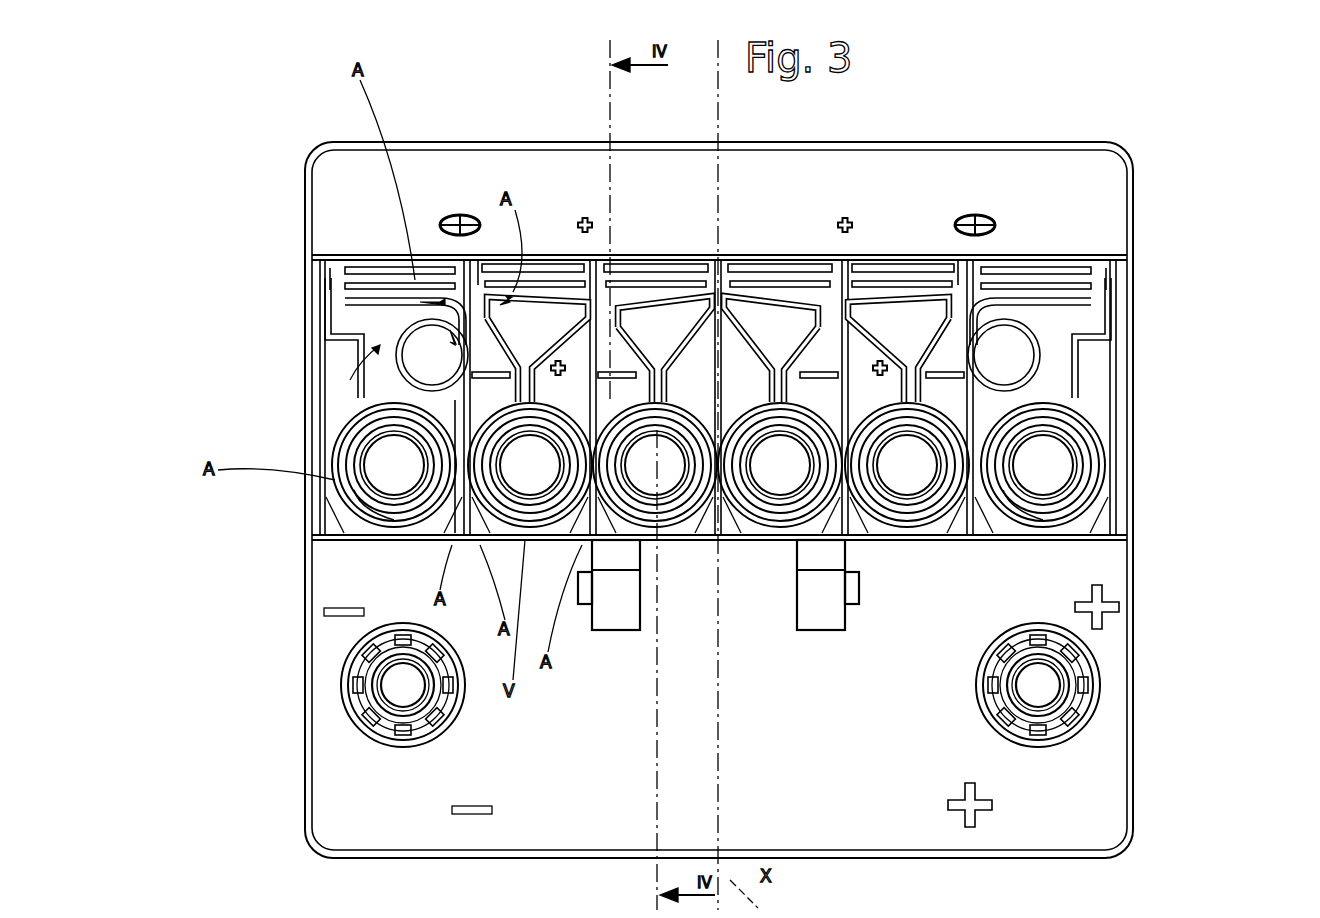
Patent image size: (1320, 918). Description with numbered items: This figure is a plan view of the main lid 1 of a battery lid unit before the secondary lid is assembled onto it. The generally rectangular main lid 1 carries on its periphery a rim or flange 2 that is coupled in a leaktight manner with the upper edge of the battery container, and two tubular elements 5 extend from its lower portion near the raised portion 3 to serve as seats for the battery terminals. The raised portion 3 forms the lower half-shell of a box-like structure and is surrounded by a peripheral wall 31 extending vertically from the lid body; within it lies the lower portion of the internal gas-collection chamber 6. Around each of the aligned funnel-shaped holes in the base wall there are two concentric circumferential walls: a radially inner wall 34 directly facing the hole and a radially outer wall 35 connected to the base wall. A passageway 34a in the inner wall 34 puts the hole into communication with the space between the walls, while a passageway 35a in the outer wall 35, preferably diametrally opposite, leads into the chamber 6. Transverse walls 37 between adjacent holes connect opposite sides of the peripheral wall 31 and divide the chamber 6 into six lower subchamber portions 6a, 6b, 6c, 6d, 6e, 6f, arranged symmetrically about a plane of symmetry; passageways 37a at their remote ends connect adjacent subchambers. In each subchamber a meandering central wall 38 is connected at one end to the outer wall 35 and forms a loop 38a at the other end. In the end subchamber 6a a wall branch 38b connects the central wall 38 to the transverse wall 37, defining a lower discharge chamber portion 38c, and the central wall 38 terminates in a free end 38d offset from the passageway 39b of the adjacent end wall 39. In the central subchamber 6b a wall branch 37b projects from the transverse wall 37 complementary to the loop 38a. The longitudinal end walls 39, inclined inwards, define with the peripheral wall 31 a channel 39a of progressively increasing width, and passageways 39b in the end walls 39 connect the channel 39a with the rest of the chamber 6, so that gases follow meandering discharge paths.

The main lid 1 is at (1140, 598).
The rim or flange 2 is at (1133, 808).
The raised portion 3 is at (1100, 238).
The tubular elements 5 is at (365, 702).
The gas-collection chamber 6 is at (645, 485).
The lower subchamber portion 6a is at (355, 545).
The lower subchamber portion 6b is at (510, 545).
The lower subchamber portion 6c is at (665, 545).
The lower subchamber portion 6d is at (742, 545).
The lower subchamber portion 6e is at (930, 545).
The lower subchamber portion 6f is at (1085, 530).
The peripheral wall 31 is at (1120, 430).
The radially inner circumferential wall 34 is at (1105, 405).
The passageway 34a is at (345, 480).
The radially outer circumferential wall 35 is at (835, 425).
The passageway 35a is at (430, 432).
The transverse wall 37 is at (455, 545).
The passageway 37a is at (480, 260).
The wall branch 37b is at (717, 374).
The central wall 38 is at (370, 378).
The loop 38a is at (380, 285).
The wall branch 38b is at (438, 390).
The lower discharge chamber portion 38c is at (325, 305).
The free end 38d is at (330, 280).
The end wall 39 is at (350, 262).
The channel 39a is at (545, 262).
The passageway 39b is at (330, 262).